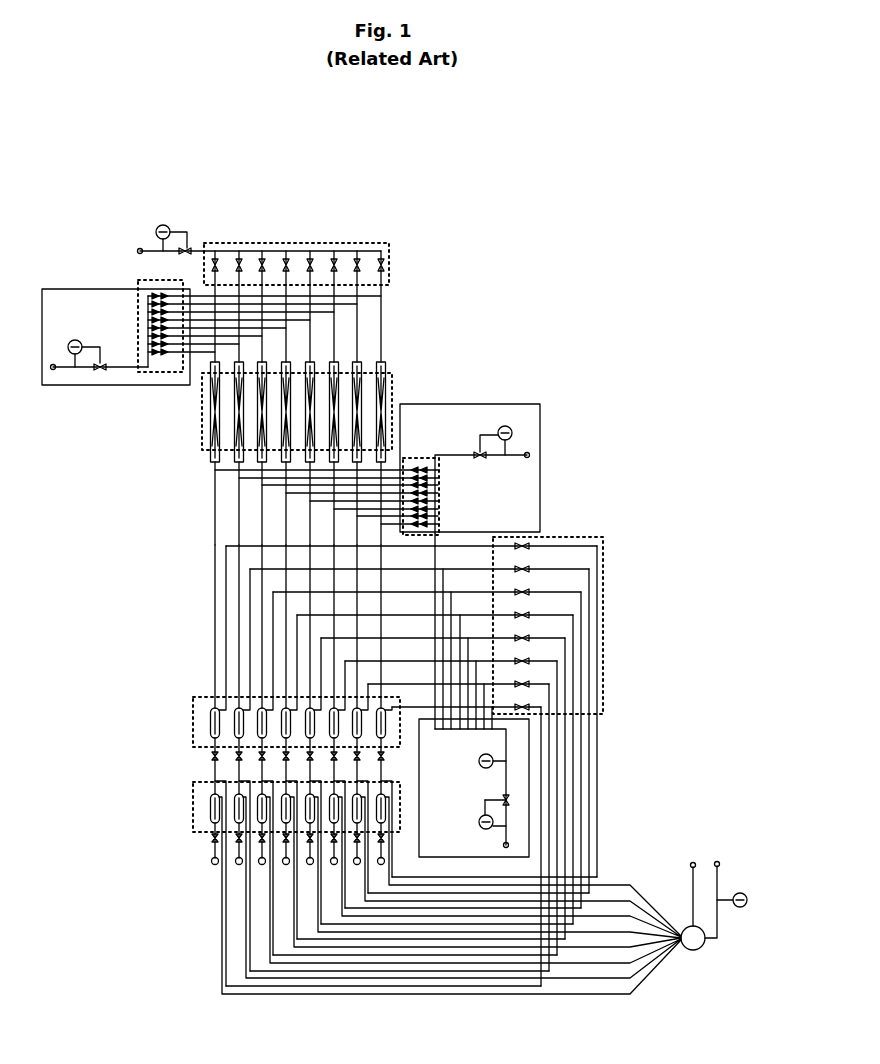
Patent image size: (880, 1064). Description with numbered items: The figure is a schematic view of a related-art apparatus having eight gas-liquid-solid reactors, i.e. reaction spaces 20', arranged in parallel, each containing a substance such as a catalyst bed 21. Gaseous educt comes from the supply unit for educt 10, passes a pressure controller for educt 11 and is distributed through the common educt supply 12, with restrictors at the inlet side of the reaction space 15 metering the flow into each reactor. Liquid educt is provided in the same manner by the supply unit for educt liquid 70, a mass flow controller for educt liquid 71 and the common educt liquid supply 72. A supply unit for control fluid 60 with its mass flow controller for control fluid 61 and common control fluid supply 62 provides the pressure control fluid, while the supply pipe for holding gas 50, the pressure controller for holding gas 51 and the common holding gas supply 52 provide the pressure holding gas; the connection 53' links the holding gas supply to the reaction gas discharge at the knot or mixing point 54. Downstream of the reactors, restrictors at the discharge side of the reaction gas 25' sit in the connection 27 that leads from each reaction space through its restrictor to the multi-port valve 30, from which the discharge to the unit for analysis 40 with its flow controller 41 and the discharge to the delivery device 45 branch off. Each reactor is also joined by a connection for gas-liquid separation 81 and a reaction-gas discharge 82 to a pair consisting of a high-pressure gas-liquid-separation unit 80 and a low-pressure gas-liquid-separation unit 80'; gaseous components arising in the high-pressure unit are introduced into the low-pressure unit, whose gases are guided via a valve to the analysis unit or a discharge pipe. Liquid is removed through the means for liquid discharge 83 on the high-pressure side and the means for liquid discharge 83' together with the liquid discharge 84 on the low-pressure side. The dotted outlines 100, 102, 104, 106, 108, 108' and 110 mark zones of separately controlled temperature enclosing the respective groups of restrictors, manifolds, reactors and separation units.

The supply unit for educt 10 is at (140, 253).
The pressure controller for educt 11 is at (191, 250).
The common educt supply 12 is at (262, 246).
The restrictors at the inlet side of the reaction space 15 is at (390, 266).
The zone of separately controlled temperature 100 is at (400, 243).
The supply unit for educt liquid 70 is at (50, 386).
The mass flow controller for educt liquid 71 is at (104, 365).
The common educt liquid supply 72 is at (113, 385).
The zone of separately controlled temperature 102 is at (150, 375).
The zone of separately controlled temperature 104 is at (394, 375).
The substance being present in the reaction space 21 is at (204, 422).
The gas-liquid-solid reactor 20' is at (266, 496).
The supply unit for control fluid 60 is at (530, 457).
The mass flow controller for control fluid 61 is at (480, 452).
The common control fluid supply 62 is at (455, 404).
The zone of separately controlled temperature 106 is at (440, 500).
The knot, mixing point 54 is at (435, 545).
The connection between holding gas supply and reaction gas discharge 53' is at (311, 631).
The restrictors at the discharge side of the reaction gas 25' is at (515, 604).
The connection between reaction space, restrictor and multi-port valve 27 is at (605, 567).
The zone of separately controlled temperature 110 is at (605, 712).
The reaction-gas discharge 82 is at (226, 640).
The connection for gas-liquid-separation 81 is at (215, 668).
The zone of separately controlled temperature 108 is at (247, 712).
The unit for gas-liquid-separation (high-pressure side) 80 is at (255, 724).
The means for liquid discharge (high-pressure side) 83 is at (255, 766).
The liquid discharge (low-pressure side) 84 is at (212, 778).
The zone of separately controlled temperature 108' is at (248, 807).
The unit for gas-liquid-separation (low-pressure side) 80' is at (405, 894).
The means for liquid discharge (low-pressure side) 83' is at (257, 861).
The supply pipe for holding gas 50 is at (505, 846).
The pressure controller for holding gas 51 is at (503, 797).
The common holding gas supply 52 is at (423, 752).
The multi-port valve 30 is at (697, 950).
The discharge to the delivery device 45 is at (693, 863).
The discharge to the unit for analysis 40 is at (717, 862).
The flow controller 41 is at (745, 910).